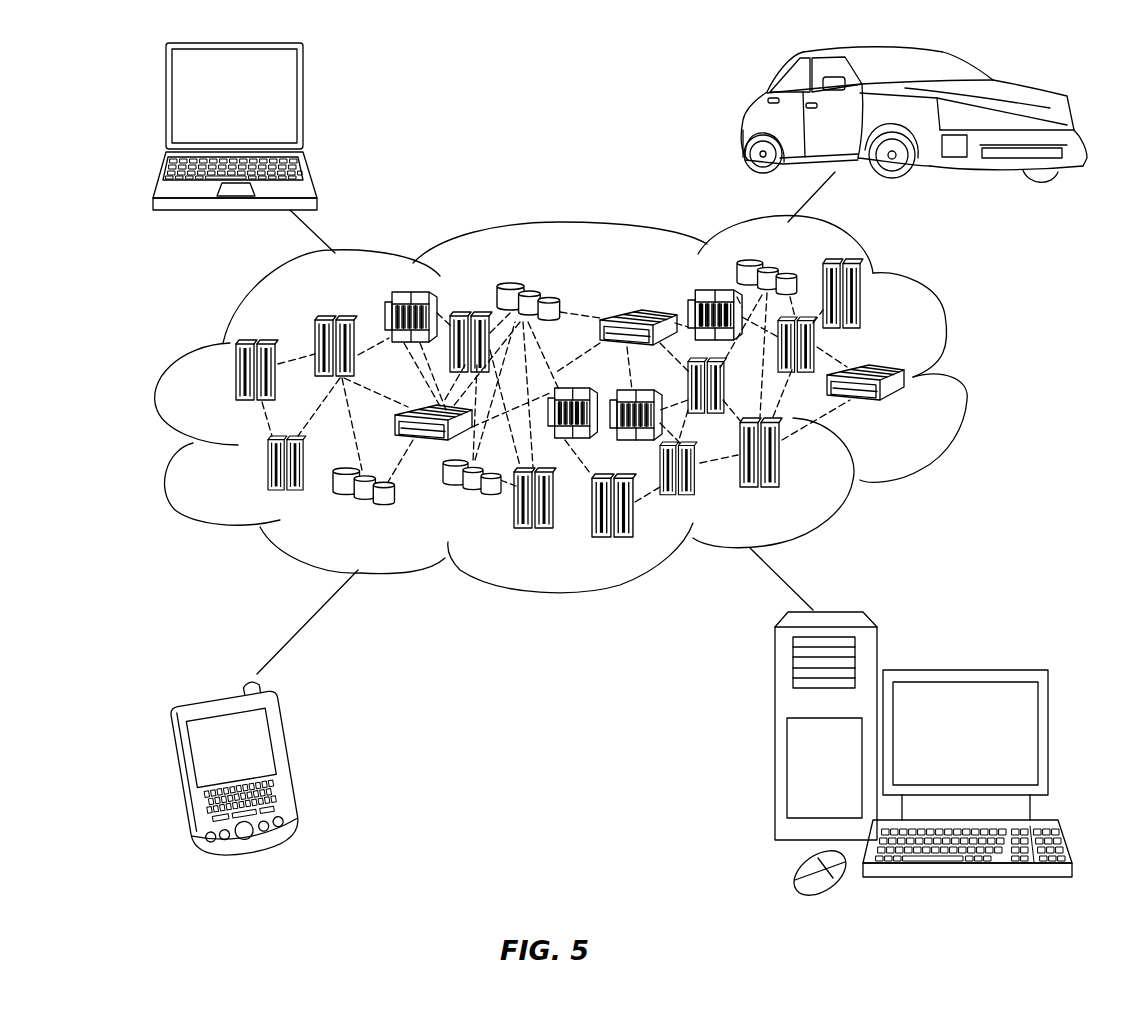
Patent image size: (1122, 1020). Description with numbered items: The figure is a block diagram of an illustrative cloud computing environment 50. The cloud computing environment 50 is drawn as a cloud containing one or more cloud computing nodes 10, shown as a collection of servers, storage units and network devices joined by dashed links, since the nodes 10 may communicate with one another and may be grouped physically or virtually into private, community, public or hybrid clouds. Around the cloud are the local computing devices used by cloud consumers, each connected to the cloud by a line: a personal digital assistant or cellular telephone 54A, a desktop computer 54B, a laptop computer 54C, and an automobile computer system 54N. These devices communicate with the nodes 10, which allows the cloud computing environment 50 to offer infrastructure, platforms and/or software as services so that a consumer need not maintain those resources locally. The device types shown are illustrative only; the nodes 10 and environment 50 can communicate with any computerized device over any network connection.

The cloud computing node 10 is at (912, 413).
The cloud computing environment 50 is at (589, 404).
The personal digital assistant or cellular telephone 54A is at (294, 763).
The desktop computer 54B is at (961, 668).
The laptop computer 54C is at (303, 107).
The automobile computer system 54N is at (742, 120).